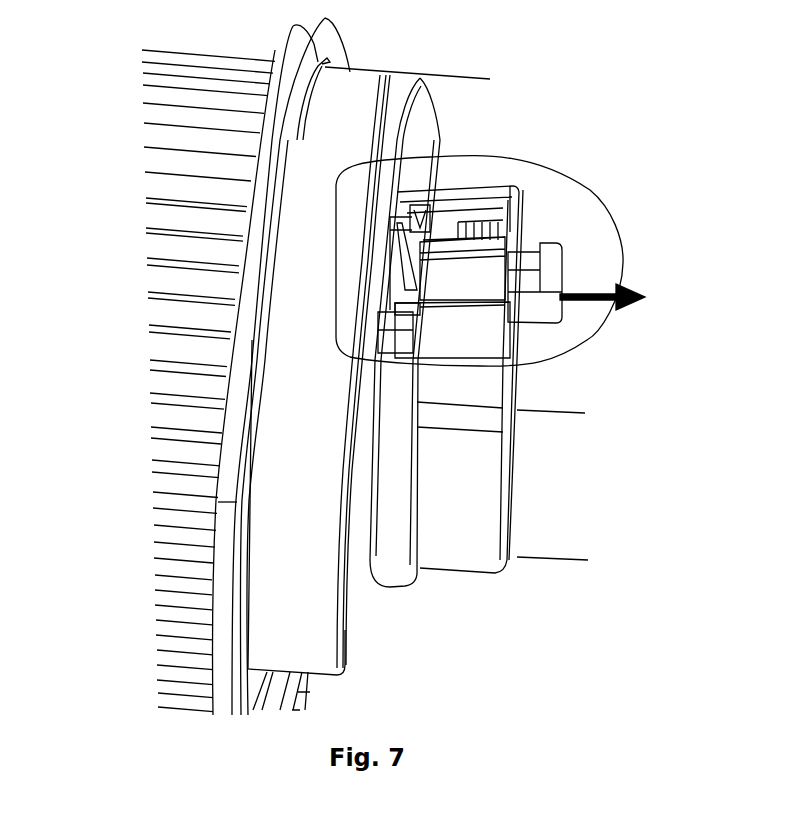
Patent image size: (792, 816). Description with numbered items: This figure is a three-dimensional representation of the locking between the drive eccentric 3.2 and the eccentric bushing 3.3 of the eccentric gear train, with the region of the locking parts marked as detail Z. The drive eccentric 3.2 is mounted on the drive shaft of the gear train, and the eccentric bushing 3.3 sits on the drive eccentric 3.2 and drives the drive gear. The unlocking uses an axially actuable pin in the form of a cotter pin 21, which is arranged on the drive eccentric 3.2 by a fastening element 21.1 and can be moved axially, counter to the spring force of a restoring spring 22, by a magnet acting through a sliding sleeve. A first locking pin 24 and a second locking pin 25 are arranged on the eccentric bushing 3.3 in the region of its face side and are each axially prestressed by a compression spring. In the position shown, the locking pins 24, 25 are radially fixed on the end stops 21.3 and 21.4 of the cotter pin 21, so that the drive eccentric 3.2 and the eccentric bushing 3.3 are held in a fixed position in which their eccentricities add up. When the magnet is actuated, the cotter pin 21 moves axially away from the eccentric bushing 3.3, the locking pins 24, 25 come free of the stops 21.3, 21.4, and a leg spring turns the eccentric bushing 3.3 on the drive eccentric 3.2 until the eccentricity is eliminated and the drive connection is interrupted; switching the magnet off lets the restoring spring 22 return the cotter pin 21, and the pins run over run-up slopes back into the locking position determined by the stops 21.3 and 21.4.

The drive eccentric 3.2 is at (543, 432).
The eccentric bushing 3.3 is at (322, 489).
The cotter pin 21 is at (560, 282).
The fastening element 21.1 is at (492, 307).
The end stop 21.3 is at (425, 215).
The end stop 21.4 is at (407, 310).
The restoring spring 22 is at (490, 240).
The first locking pin 24 is at (390, 330).
The second locking pin 25 is at (408, 195).
The detail Z is at (592, 337).